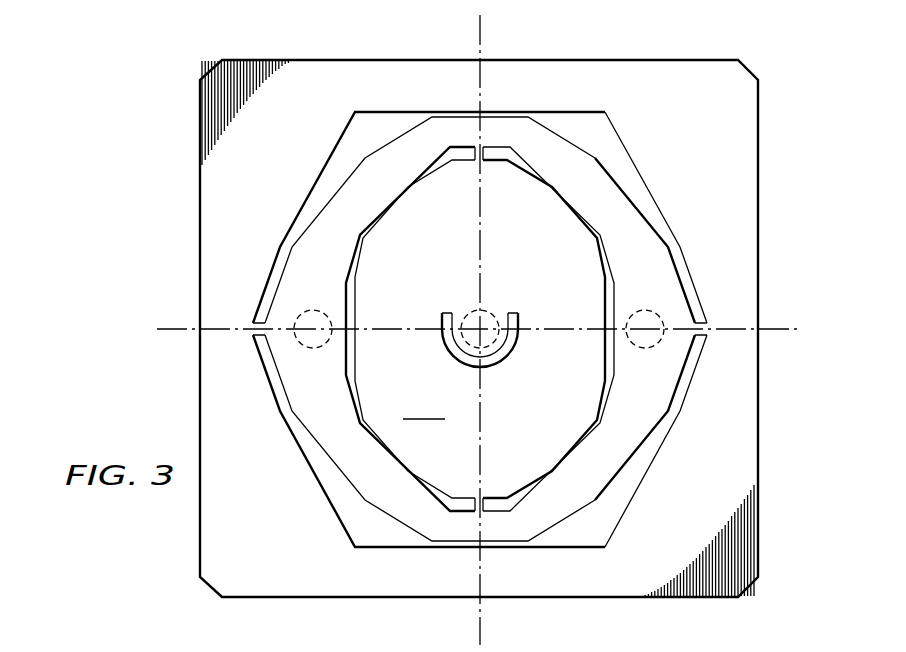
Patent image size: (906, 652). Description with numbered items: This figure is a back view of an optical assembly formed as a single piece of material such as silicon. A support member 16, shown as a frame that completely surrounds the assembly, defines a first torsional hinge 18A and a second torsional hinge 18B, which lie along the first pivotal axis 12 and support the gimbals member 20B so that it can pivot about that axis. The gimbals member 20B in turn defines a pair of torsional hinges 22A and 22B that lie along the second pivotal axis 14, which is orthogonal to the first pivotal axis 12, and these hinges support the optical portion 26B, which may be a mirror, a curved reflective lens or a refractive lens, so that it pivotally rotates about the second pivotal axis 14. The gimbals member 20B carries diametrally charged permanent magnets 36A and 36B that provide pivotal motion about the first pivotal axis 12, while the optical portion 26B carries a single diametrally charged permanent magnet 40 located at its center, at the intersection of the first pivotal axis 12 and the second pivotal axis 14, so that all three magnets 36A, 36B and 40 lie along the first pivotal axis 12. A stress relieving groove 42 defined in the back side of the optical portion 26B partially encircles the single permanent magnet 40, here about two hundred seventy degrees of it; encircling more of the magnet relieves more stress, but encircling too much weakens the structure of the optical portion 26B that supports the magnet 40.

The first pivotal axis 12 is at (786, 328).
The second pivotal axis 14 is at (482, 30).
The support member 16 is at (198, 206).
The first torsional hinge 18A is at (710, 334).
The second torsional hinge 18B is at (250, 334).
The gimbals member 20B is at (635, 203).
The torsional hinge 22A is at (473, 506).
The torsional hinge 22B is at (473, 152).
The optical portion 26B is at (480, 329).
The diametrally charged permanent magnet 36A is at (645, 309).
The diametrally charged permanent magnet 36B is at (312, 309).
The single diametrally charged permanent magnet 40 is at (485, 308).
The groove 42 is at (443, 312).